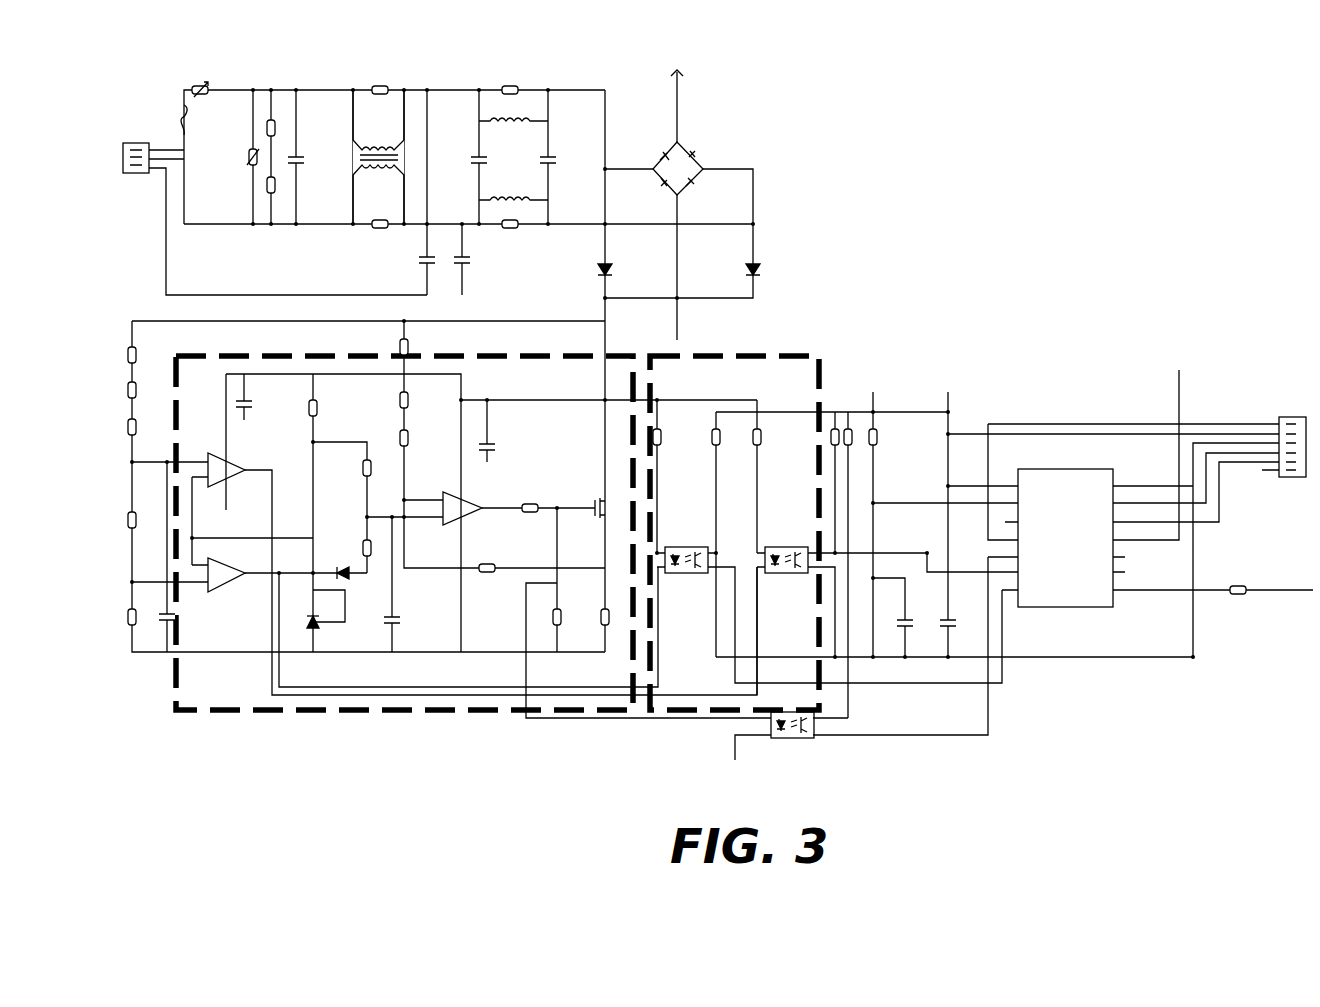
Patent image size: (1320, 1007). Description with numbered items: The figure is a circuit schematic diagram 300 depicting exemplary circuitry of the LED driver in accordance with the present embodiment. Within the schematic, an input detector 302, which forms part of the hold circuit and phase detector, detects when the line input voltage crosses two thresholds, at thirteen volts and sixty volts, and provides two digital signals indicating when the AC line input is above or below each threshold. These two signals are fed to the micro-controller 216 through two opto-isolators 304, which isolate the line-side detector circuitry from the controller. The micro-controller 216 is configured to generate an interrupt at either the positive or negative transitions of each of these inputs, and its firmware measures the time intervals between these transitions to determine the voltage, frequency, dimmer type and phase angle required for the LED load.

The circuit schematic diagram 300 is at (715, 434).
The input detector 302 is at (208, 713).
The opto-isolators 304 is at (783, 354).
The micro-controller 216 is at (1073, 617).